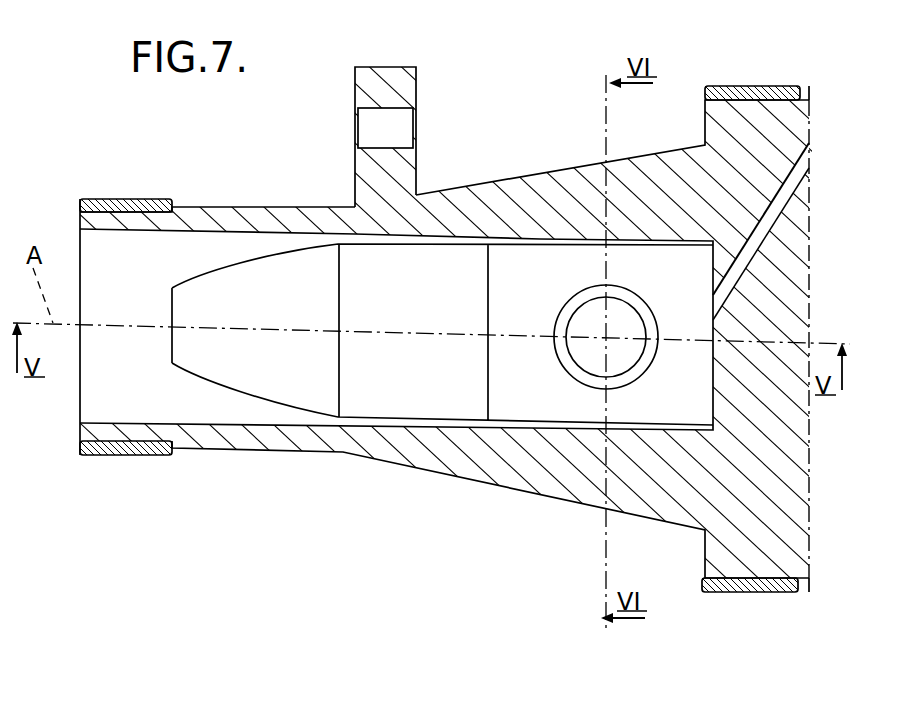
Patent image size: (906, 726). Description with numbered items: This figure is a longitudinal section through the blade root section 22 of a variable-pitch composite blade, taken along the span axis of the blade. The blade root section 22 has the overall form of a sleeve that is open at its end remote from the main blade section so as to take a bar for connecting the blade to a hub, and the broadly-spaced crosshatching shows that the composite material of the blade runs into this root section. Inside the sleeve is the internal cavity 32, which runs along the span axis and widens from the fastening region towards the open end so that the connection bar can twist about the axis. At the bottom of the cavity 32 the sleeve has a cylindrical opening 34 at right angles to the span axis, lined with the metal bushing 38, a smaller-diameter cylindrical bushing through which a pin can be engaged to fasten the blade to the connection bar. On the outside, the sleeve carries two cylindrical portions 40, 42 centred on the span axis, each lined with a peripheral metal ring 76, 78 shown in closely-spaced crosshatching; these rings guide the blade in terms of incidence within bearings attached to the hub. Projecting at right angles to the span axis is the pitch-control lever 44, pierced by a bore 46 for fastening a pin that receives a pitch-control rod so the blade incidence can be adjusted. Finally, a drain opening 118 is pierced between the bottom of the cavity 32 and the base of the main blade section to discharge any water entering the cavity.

The blade root section 22 is at (470, 538).
The internal cavity 32 is at (288, 392).
The cylindrical opening 34 is at (585, 322).
The metal bushing 38 is at (647, 365).
The cylindrical portion 40 is at (118, 202).
The cylindrical portion 42 is at (752, 83).
The pitch-control lever 44 is at (392, 82).
The bore 46 is at (393, 132).
The ring 76 is at (118, 452).
The ring 78 is at (753, 593).
The drain opening 118 is at (772, 217).